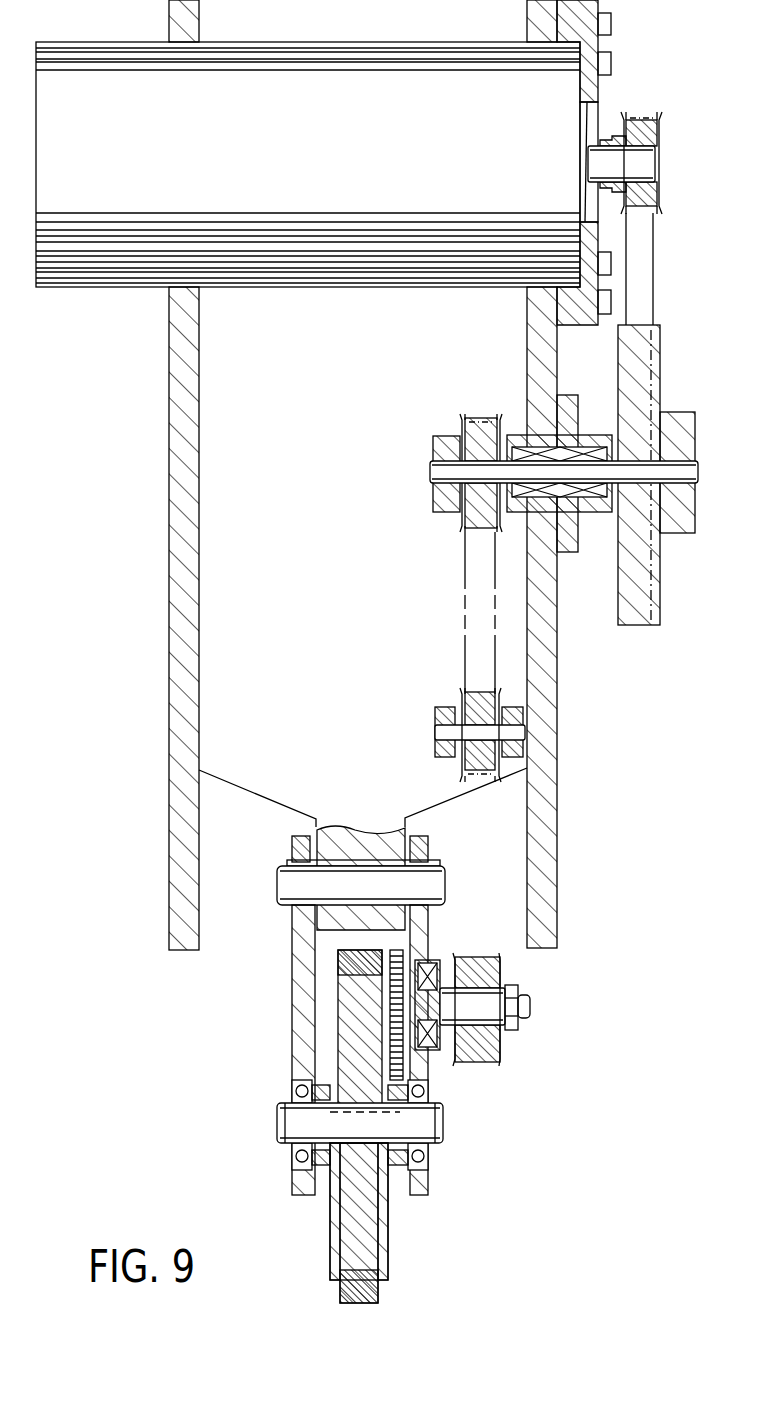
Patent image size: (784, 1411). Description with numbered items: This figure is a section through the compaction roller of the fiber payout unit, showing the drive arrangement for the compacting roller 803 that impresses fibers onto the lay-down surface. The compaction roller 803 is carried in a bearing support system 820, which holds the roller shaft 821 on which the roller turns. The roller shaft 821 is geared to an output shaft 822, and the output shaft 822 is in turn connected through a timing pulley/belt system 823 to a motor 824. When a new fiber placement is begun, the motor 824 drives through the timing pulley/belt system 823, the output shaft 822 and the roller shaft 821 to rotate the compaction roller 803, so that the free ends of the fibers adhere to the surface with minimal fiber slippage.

The motor 824 is at (445, 170).
The timing pulley/belt system 823 is at (510, 783).
The output shaft 822 is at (531, 1002).
The roller shaft 821 is at (443, 1122).
The bearing support system 820 is at (428, 1165).
The compacting roller 803 is at (385, 1265).